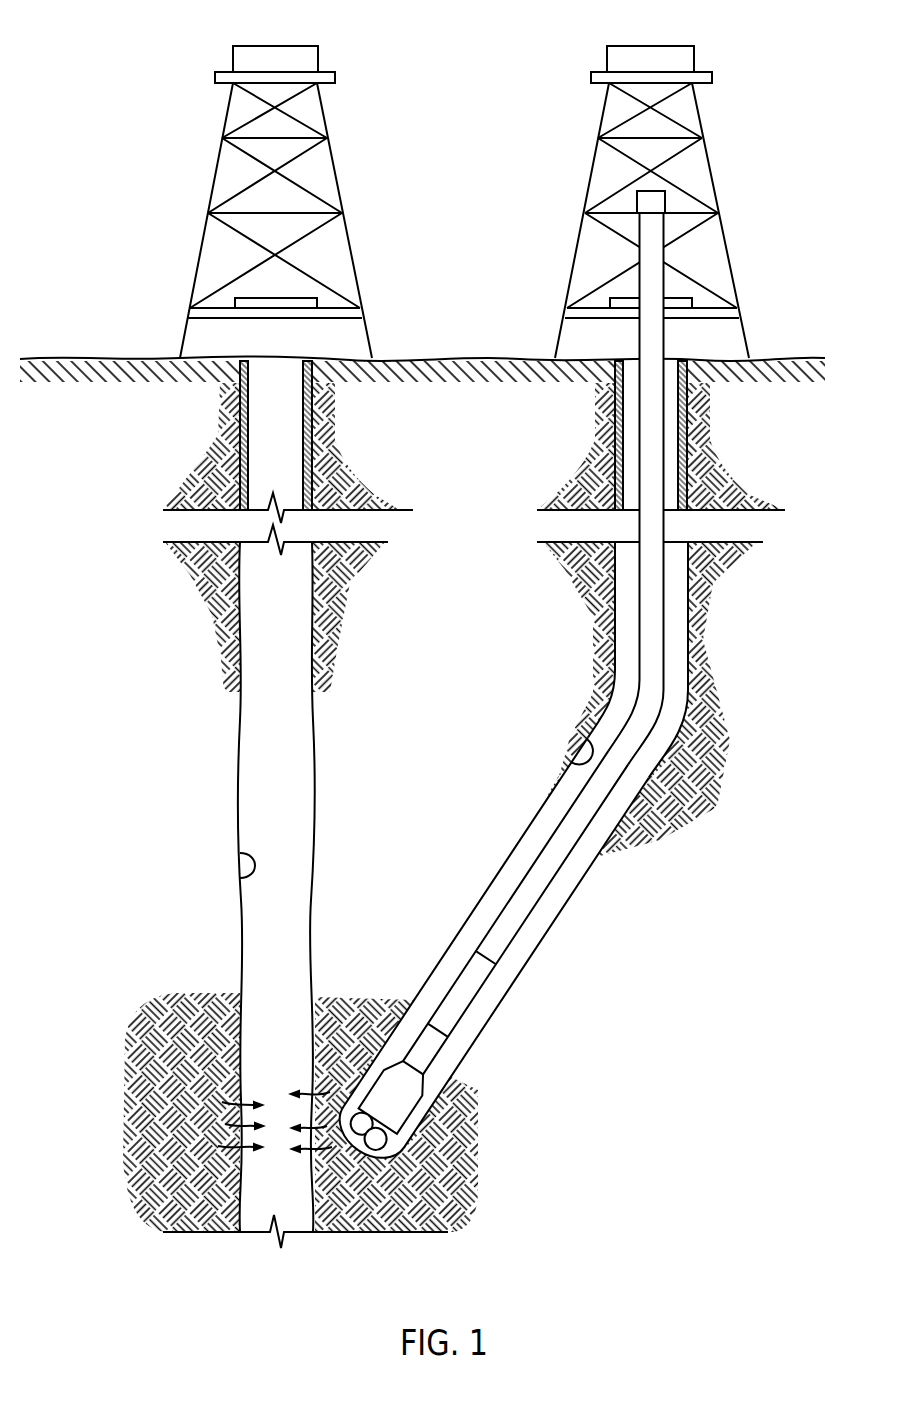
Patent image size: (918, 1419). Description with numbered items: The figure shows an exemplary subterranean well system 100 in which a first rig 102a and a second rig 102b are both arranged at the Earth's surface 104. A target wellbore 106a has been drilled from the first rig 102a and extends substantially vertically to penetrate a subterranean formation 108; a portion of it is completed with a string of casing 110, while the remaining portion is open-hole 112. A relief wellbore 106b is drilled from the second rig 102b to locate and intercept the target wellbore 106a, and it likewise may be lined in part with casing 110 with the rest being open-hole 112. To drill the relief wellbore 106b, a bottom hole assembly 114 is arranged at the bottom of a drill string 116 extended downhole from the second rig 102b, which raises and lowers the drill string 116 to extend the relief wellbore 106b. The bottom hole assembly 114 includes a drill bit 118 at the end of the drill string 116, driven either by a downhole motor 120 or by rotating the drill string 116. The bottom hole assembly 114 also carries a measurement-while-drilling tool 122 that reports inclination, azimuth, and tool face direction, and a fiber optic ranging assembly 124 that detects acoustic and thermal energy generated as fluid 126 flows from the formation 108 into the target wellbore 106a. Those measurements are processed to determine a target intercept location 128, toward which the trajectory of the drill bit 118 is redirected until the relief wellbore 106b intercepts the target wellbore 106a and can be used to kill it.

The subterranean well system 100 is at (95, 97).
The first rig 102a is at (207, 165).
The second rig 102b is at (577, 163).
The Earth's surface 104 is at (75, 358).
The target wellbore 106a is at (240, 733).
The relief wellbore 106b is at (614, 697).
The subterranean formation 108 is at (197, 1098).
The casing 110 is at (238, 436).
The open-hole 112 is at (240, 855).
The bottom hole assembly 114 is at (388, 964).
The drill string 116 is at (664, 435).
The drill bit 118 is at (390, 1130).
The downhole motor 120 is at (470, 1127).
The measurement-while-drilling tool 122 is at (468, 985).
The fiber optic ranging assembly 124 is at (431, 1045).
The fluid 126 is at (307, 1150).
The target intercept location 128 is at (327, 1100).